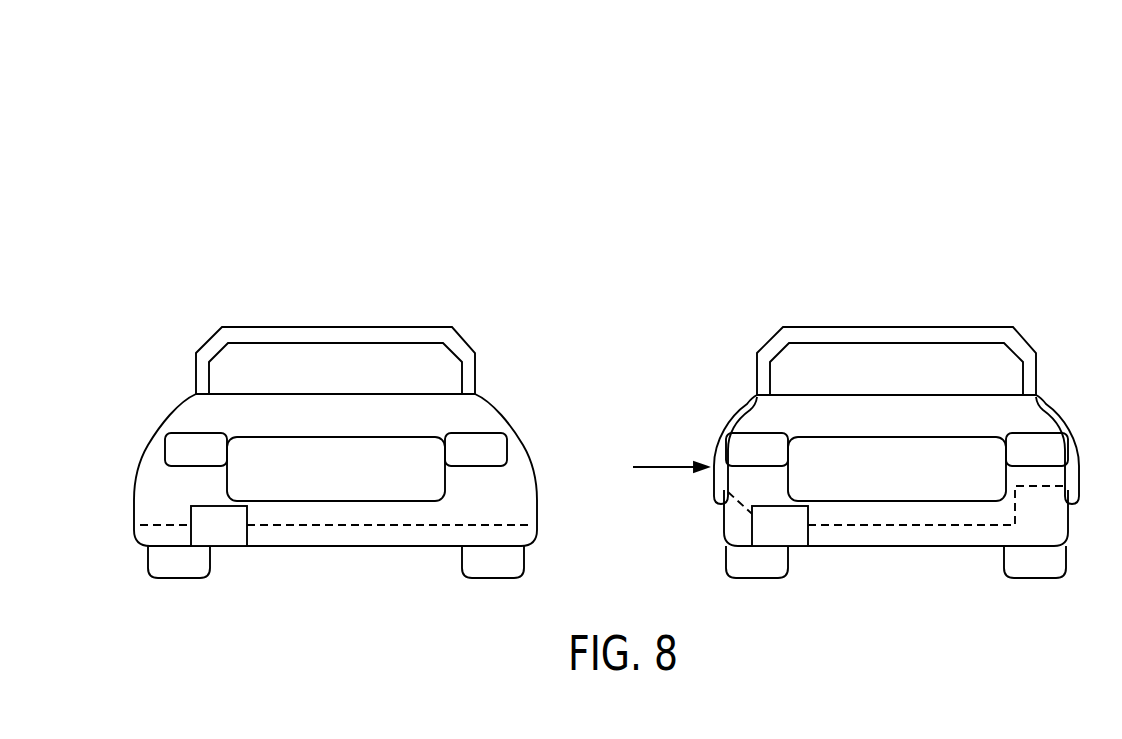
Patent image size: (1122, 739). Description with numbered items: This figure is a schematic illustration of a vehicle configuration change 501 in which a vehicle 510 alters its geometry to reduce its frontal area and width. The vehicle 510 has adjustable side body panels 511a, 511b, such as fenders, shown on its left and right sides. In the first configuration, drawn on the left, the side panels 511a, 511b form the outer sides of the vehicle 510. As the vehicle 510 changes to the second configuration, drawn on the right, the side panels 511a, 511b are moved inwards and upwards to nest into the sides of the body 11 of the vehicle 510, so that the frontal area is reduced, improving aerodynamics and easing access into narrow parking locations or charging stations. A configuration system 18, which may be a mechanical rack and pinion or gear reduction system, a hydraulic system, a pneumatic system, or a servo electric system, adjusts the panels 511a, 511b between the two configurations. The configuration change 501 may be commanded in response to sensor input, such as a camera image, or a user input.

The vehicle configuration change 501 is at (110, 118).
The vehicle 510 is at (70, 298).
The body 11 is at (183, 415).
The side body panel 511a is at (118, 482).
The side body panel 511b is at (538, 428).
The configuration system 18 is at (232, 540).